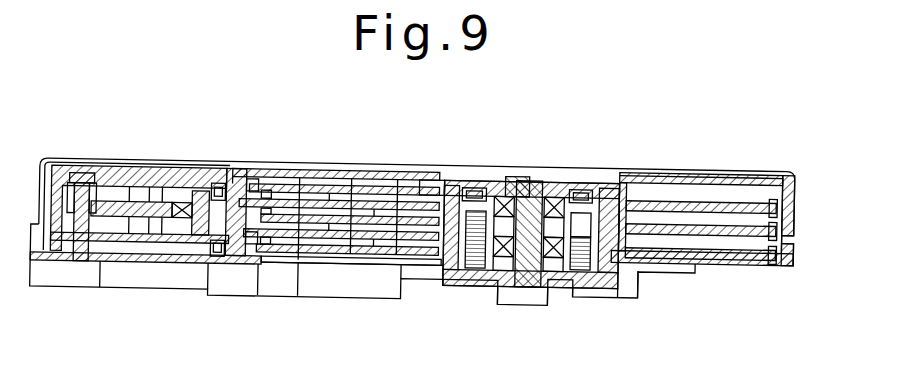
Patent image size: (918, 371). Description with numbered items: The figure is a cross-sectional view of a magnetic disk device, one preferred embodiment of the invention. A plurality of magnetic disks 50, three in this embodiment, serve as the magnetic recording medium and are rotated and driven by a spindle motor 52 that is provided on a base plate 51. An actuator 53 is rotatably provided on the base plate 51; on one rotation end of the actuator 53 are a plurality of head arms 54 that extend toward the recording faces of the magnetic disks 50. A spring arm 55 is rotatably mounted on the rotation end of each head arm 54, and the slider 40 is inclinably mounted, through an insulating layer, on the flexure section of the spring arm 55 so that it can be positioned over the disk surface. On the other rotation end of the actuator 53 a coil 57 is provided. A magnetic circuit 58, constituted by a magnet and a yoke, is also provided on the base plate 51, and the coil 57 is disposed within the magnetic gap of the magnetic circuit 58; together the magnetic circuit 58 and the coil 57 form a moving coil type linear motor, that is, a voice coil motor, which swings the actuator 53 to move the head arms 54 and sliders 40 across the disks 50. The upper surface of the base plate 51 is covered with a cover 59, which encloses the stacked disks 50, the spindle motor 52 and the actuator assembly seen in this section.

The slider 40 is at (428, 175).
The magnetic disks 50 is at (725, 180).
The base plate 51 is at (332, 262).
The spindle motor 52 is at (633, 172).
The actuator 53 is at (303, 258).
The head arms 54 is at (335, 205).
The spring arm 55 is at (400, 168).
The coil 57 is at (132, 160).
The magnetic circuit 58 is at (112, 135).
The cover 59 is at (260, 160).